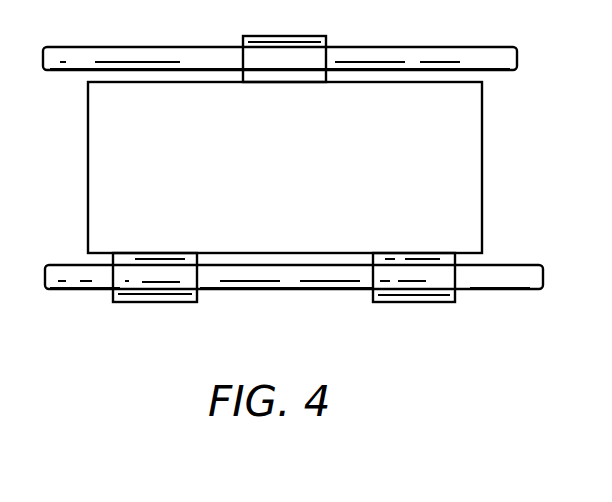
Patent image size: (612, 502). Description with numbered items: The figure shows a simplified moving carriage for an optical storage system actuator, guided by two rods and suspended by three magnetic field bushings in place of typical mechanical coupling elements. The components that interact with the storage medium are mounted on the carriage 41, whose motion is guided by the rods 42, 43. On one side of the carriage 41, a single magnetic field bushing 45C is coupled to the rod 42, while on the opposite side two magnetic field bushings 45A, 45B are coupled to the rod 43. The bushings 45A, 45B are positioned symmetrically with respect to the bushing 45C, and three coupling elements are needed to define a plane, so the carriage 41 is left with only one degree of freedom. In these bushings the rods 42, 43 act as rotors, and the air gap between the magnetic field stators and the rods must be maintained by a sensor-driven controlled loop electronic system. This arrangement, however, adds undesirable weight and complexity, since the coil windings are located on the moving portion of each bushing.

The carriage 41 is at (88, 173).
The rod 42 is at (71, 46).
The rod 43 is at (513, 264).
The magnetic field bushing 45A is at (180, 303).
The magnetic field bushing 45B is at (443, 303).
The magnetic field bushing 45C is at (316, 36).